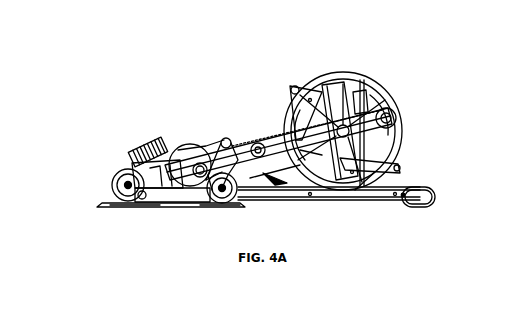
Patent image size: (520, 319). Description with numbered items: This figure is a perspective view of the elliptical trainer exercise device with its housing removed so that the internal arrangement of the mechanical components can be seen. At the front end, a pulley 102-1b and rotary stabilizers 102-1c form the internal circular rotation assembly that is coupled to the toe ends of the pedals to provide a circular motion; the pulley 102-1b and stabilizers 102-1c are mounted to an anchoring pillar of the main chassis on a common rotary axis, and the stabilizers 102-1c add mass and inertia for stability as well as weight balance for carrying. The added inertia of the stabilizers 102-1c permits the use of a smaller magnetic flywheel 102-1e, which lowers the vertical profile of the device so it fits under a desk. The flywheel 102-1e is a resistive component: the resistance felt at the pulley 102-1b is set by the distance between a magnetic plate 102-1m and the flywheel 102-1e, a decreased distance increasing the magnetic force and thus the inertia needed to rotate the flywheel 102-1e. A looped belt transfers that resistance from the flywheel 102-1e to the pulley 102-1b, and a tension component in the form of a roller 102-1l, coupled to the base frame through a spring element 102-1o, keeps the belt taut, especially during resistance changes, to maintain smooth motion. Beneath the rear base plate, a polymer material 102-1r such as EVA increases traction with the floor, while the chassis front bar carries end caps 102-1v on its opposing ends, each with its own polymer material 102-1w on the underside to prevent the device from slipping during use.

The pulley 102-1b is at (378, 92).
The rotary stabilizers 102-1c is at (333, 95).
The flywheel 102-1e is at (183, 145).
The roller 102-1l is at (255, 147).
The magnetic plate 102-1m is at (225, 162).
The polymer material 102-1r is at (110, 208).
The spring element 102-1o is at (268, 173).
The end caps 102-1v is at (413, 203).
The polymer material 102-1w is at (422, 207).